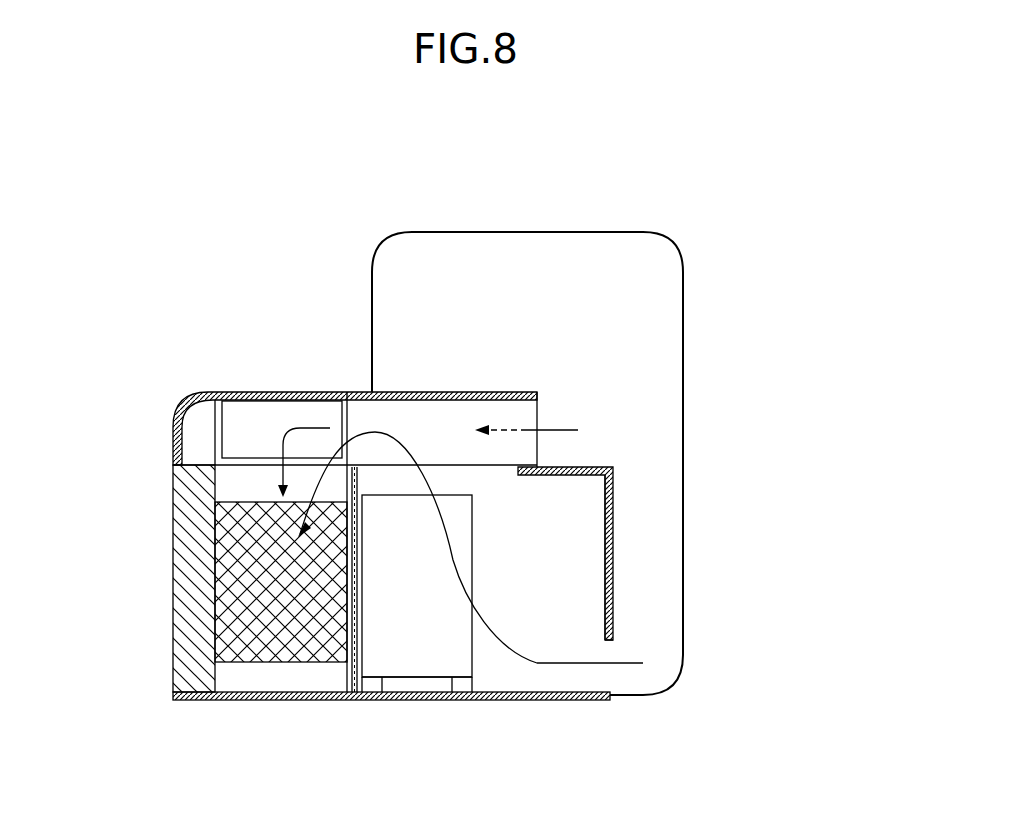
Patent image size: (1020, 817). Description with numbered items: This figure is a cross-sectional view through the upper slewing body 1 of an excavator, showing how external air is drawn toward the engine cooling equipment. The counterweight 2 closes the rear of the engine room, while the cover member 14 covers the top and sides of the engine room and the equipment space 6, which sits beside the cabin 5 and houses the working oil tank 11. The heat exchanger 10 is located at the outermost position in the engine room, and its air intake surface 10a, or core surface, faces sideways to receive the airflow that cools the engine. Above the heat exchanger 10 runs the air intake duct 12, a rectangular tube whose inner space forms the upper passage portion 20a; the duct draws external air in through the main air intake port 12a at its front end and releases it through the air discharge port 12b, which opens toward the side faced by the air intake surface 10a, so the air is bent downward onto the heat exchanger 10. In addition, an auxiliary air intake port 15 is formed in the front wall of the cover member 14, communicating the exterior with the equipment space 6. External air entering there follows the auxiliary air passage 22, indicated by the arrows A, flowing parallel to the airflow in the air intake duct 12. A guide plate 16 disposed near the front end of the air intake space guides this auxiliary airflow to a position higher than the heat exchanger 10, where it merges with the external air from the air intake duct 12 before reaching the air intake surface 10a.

The upper slewing body 1 is at (696, 306).
The counterweight 2 is at (173, 507).
The cabin 5 is at (627, 232).
The equipment space 6 is at (572, 565).
The heat exchanger 10 is at (276, 688).
The air intake surface 10a is at (240, 596).
The working oil tank 11 is at (472, 520).
The air intake duct 12 is at (347, 383).
The main air intake port 12a is at (537, 413).
The air discharge port 12b is at (227, 430).
The cover member 14 is at (613, 512).
The auxiliary air intake port 15 is at (613, 640).
The guide plate 16 is at (360, 578).
The upper passage portion 20a is at (280, 417).
The auxiliary air passage 22 is at (493, 667).
The arrows A is at (492, 634).